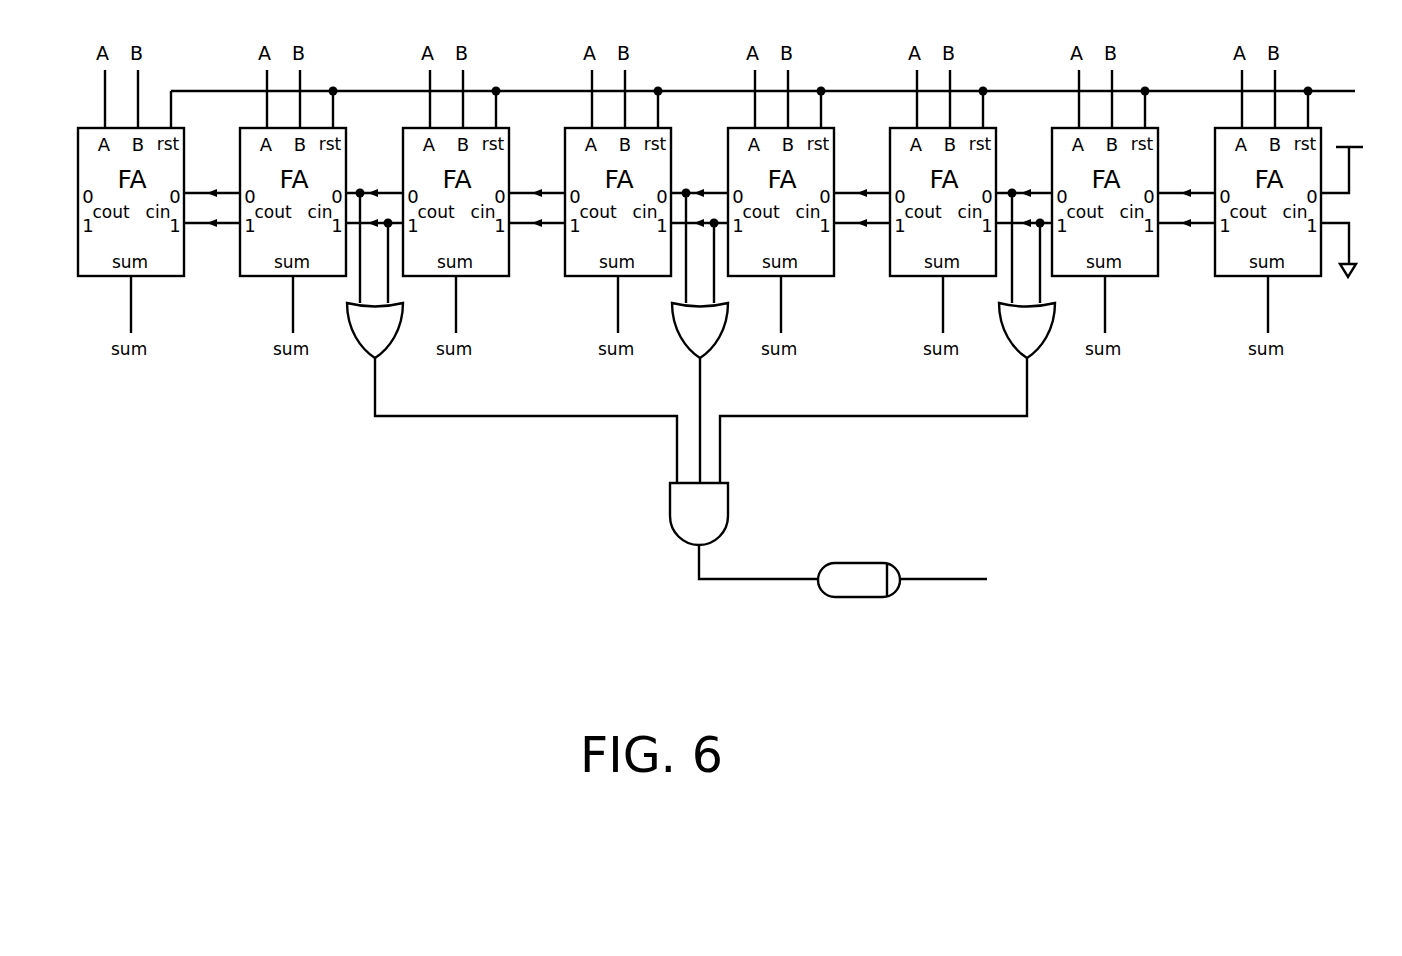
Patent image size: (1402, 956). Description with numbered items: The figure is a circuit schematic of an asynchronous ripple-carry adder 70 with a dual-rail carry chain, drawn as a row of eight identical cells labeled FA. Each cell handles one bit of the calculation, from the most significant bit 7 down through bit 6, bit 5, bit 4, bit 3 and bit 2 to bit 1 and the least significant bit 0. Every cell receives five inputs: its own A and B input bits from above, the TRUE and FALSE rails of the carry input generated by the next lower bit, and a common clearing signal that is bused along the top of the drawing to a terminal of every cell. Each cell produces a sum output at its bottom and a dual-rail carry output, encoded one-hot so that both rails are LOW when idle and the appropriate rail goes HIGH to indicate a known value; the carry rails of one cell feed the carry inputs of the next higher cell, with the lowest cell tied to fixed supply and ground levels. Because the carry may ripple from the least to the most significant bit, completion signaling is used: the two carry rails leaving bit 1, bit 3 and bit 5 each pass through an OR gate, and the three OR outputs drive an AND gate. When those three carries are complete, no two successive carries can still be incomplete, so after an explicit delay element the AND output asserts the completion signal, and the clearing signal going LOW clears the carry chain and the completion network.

The asynchronous ripple-carry adder 70 is at (428, 552).
The bit 7 full adder cell 7 is at (131, 204).
The bit 6 full adder cell 6 is at (293, 204).
The bit 5 full adder cell 5 is at (456, 204).
The bit 4 full adder cell 4 is at (618, 204).
The bit 3 full adder cell 3 is at (781, 204).
The bit 2 full adder cell 2 is at (943, 204).
The bit 1 full adder cell 1 is at (1105, 204).
The bit 0 full adder cell 0 is at (1268, 204).